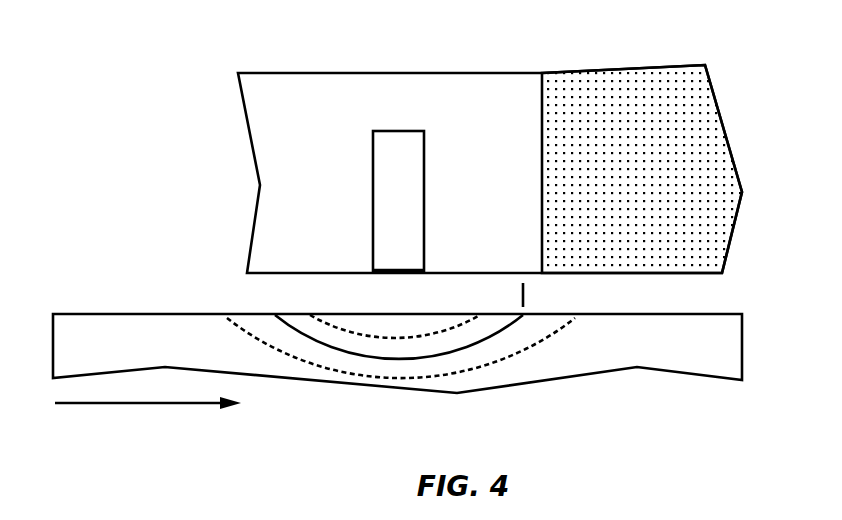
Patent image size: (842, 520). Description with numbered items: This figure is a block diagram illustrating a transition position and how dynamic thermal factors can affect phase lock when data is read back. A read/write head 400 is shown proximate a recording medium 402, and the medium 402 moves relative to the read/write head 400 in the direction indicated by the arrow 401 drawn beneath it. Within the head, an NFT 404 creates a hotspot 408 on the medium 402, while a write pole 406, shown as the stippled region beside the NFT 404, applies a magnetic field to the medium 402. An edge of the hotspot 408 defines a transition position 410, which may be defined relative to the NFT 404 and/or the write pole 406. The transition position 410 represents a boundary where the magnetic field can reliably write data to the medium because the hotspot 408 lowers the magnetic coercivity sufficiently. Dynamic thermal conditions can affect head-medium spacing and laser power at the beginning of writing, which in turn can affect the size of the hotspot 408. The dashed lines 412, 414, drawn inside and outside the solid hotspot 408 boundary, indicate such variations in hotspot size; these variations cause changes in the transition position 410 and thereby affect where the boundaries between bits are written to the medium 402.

The read/write head 400 is at (328, 79).
The arrow 401 is at (123, 404).
The recording medium 402 is at (157, 314).
The NFT 404 is at (374, 184).
The write pole 406 is at (647, 75).
The hotspot 408 is at (397, 362).
The transition position 410 is at (530, 291).
The dashed line 412 is at (419, 336).
The dashed line 414 is at (497, 364).